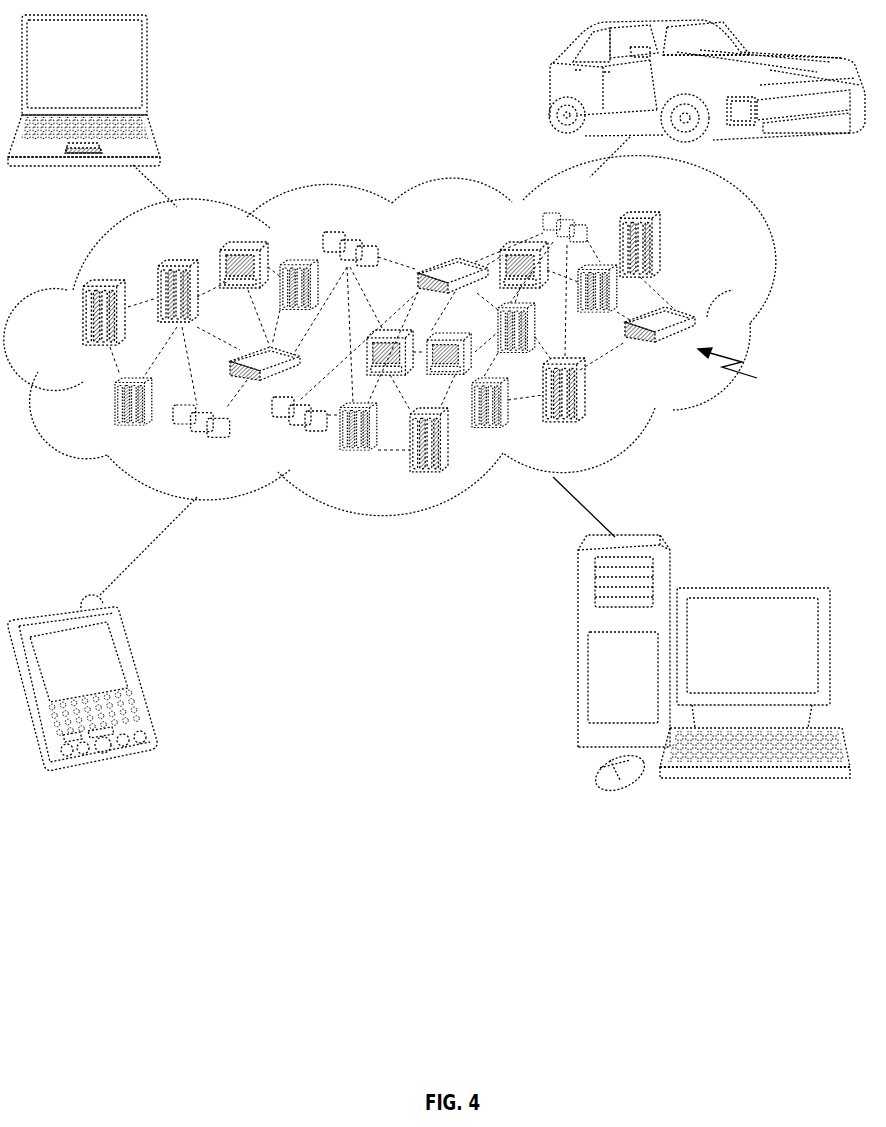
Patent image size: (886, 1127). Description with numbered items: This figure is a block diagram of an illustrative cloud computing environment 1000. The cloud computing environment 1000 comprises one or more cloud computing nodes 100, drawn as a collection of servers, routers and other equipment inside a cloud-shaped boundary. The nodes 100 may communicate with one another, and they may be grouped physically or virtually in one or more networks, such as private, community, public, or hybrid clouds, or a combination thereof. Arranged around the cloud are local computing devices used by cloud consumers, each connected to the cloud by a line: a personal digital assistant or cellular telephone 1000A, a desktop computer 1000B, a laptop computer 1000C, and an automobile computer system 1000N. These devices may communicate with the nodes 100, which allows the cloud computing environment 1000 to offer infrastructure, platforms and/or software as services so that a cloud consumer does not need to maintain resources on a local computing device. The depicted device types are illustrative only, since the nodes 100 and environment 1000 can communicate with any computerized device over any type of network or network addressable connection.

The cloud computing environment 1000 is at (750, 323).
The cloud computing nodes 100 is at (757, 378).
The personal digital assistant (PDA) or cellular telephone 1000A is at (138, 675).
The desktop computer 1000B is at (762, 568).
The laptop computer 1000C is at (150, 68).
The automobile computer system 1000N is at (550, 88).